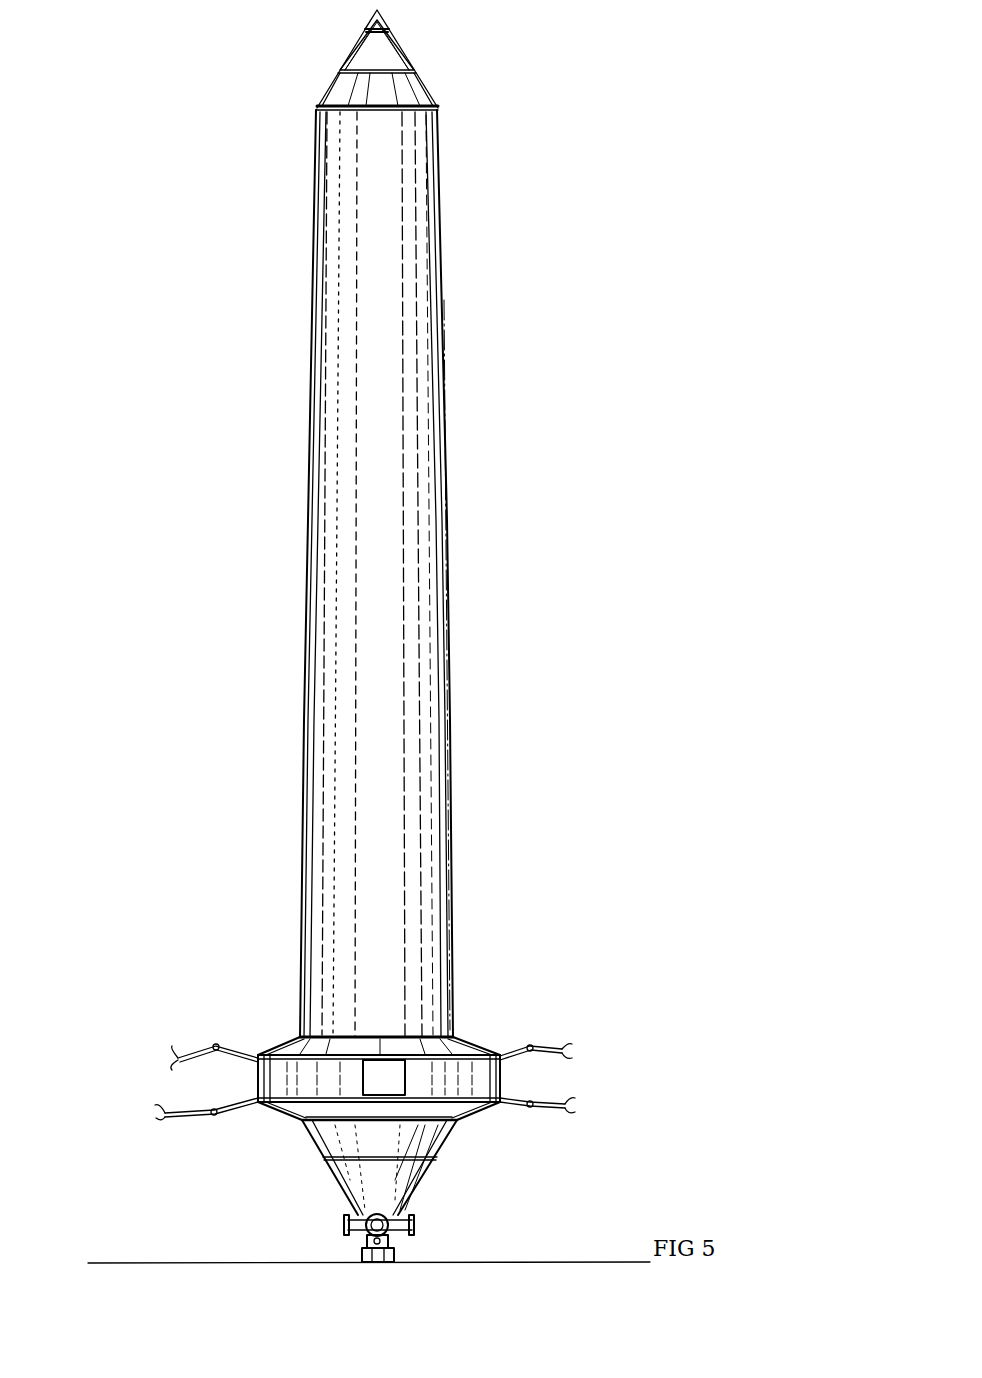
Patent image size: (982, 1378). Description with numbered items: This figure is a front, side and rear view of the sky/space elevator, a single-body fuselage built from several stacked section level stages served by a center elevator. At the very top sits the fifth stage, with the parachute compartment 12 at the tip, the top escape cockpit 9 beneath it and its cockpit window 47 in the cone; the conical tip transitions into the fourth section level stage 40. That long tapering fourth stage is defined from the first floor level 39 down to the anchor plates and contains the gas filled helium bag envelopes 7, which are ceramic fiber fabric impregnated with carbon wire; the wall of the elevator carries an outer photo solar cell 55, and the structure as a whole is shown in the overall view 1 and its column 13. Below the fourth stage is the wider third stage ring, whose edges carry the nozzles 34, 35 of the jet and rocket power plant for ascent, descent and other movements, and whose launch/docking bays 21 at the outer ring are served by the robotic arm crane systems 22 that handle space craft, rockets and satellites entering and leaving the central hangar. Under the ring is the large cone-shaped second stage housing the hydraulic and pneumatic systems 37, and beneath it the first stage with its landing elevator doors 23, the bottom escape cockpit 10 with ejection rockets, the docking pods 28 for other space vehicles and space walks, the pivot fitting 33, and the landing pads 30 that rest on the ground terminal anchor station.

The transport and erection structure 1 is at (360, 72).
The gas filled helium bag envelope 7 is at (418, 247).
The top escape cockpit 9 is at (415, 50).
The bottom escape cockpit 10 is at (345, 1165).
The parachute compartment 12 is at (385, 18).
The tower column 13 is at (425, 493).
The launch/docking bay 21 is at (502, 1073).
The robotic arm crane system 22 is at (530, 1048).
The landing elevator door 23 is at (310, 1120).
The docking pod 28 is at (418, 1225).
The landing pad 30 is at (395, 1264).
The pivot bracket 33 is at (400, 1250).
The nozzle 34 is at (297, 1040).
The nozzle 35 is at (480, 1112).
The hydraulic and pneumatic systems 37 is at (425, 1170).
The first floor level of the third section 39 is at (453, 714).
The fourth section level stage 40 is at (425, 78).
The cockpit window 47 is at (380, 42).
The outer photo solar cell 55 is at (325, 520).